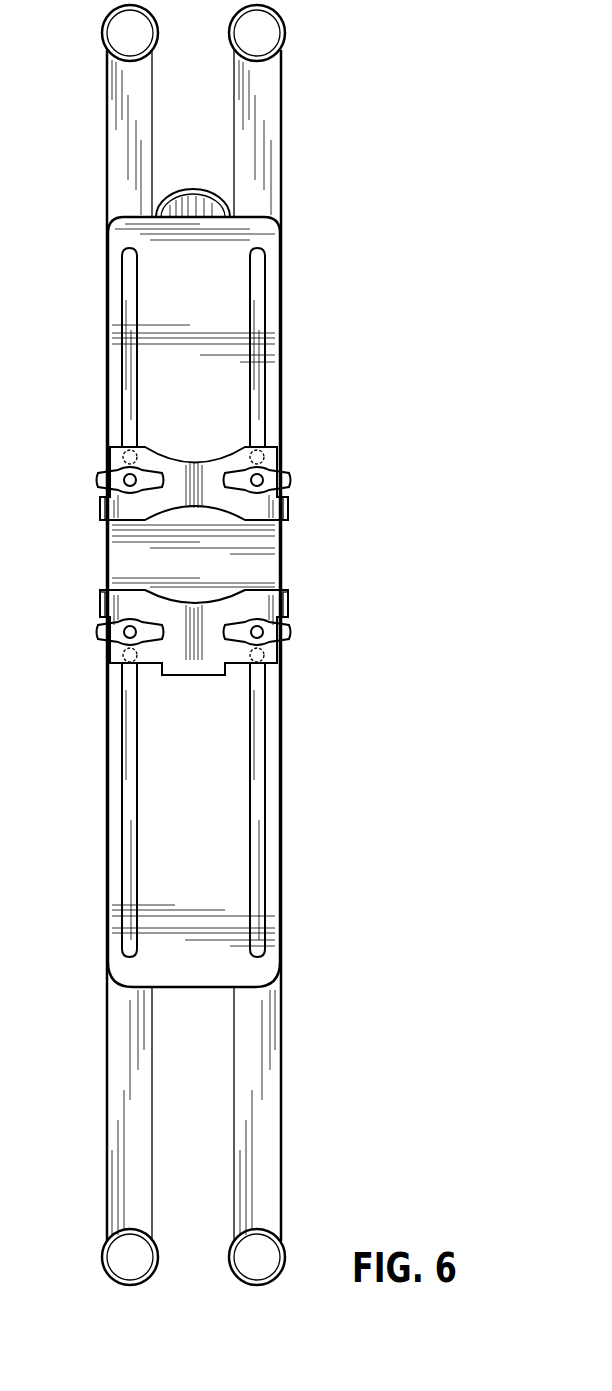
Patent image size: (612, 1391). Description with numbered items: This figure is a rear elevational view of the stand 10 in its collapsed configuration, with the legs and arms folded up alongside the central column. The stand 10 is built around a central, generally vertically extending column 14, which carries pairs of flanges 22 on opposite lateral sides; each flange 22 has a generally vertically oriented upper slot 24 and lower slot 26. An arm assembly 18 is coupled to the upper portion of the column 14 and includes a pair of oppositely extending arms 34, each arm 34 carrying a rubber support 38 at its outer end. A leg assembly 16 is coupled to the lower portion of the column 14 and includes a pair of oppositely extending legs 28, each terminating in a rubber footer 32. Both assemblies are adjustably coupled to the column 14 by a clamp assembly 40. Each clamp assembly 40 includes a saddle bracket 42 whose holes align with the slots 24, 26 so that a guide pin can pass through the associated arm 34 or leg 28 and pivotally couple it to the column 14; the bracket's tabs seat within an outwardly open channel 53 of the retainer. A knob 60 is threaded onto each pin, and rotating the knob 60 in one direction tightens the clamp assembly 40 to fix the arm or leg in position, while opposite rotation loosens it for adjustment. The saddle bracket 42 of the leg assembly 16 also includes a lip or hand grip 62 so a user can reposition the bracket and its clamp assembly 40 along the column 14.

The stand 10 is at (466, 64).
The column 14 is at (193, 192).
The leg assembly 16 is at (191, 1136).
The arm assembly 18 is at (190, 623).
The flanges 22 is at (201, 858).
The upper slot 24 is at (122, 378).
The lower slot 26 is at (122, 790).
The legs 28 is at (108, 1105).
The rubber footer 32 is at (113, 1251).
The arms 34 is at (110, 130).
The rubber support 38 is at (106, 42).
The clamp assembly 40 is at (193, 462).
The saddle bracket 42 is at (211, 500).
The channel 53 is at (283, 522).
The knob 60 is at (100, 478).
The hand grip 62 is at (208, 680).